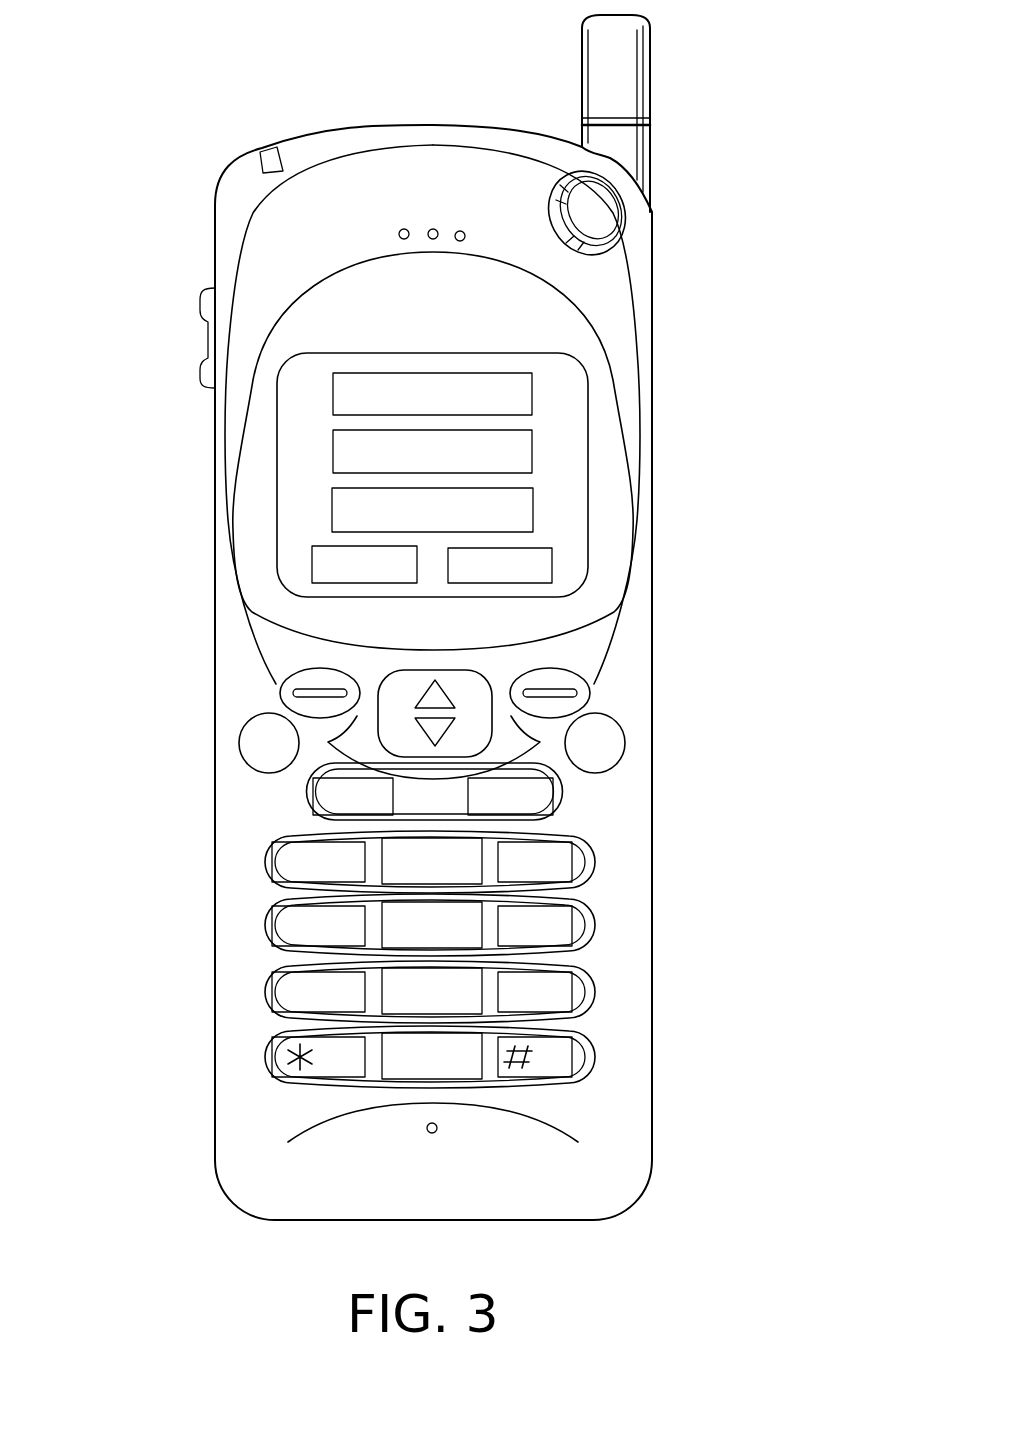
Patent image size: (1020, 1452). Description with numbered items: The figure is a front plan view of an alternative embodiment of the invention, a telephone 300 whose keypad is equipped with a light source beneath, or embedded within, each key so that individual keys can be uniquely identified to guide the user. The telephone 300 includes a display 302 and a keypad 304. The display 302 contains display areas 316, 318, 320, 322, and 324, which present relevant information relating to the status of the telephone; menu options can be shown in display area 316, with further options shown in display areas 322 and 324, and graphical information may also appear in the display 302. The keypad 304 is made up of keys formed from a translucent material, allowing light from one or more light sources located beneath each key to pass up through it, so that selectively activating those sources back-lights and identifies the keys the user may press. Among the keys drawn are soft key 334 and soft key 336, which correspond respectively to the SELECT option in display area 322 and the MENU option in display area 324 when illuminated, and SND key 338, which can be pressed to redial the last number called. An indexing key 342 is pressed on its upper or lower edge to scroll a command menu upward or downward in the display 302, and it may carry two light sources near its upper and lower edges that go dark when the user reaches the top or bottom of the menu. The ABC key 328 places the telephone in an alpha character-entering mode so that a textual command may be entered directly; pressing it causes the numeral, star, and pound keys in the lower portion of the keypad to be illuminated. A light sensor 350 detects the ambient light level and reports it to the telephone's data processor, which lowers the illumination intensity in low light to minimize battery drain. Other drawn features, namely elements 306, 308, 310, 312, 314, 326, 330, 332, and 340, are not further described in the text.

The telephone 300 is at (316, 121).
The display 302 is at (437, 451).
The keypad 304 is at (466, 960).
The microphone 306 is at (430, 1133).
The indicator lights 308 is at (433, 228).
The antenna 310 is at (650, 90).
The side volume button 312 is at (200, 325).
The earpiece speaker 314 is at (614, 218).
The display area 316 is at (532, 390).
The display area 318 is at (532, 452).
The display area 320 is at (533, 510).
The display area 322 is at (312, 560).
The display area 324 is at (552, 572).
The CLR key 326 is at (240, 741).
The ABC key 328 is at (624, 741).
The numeric key 1 330 is at (266, 863).
The numeric key 3 332 is at (618, 864).
The soft key 334 is at (285, 690).
The soft key 336 is at (585, 690).
The SND key 338 is at (308, 794).
The END key 340 is at (562, 794).
The indexing key 342 is at (385, 672).
The light sensor 350 is at (262, 163).